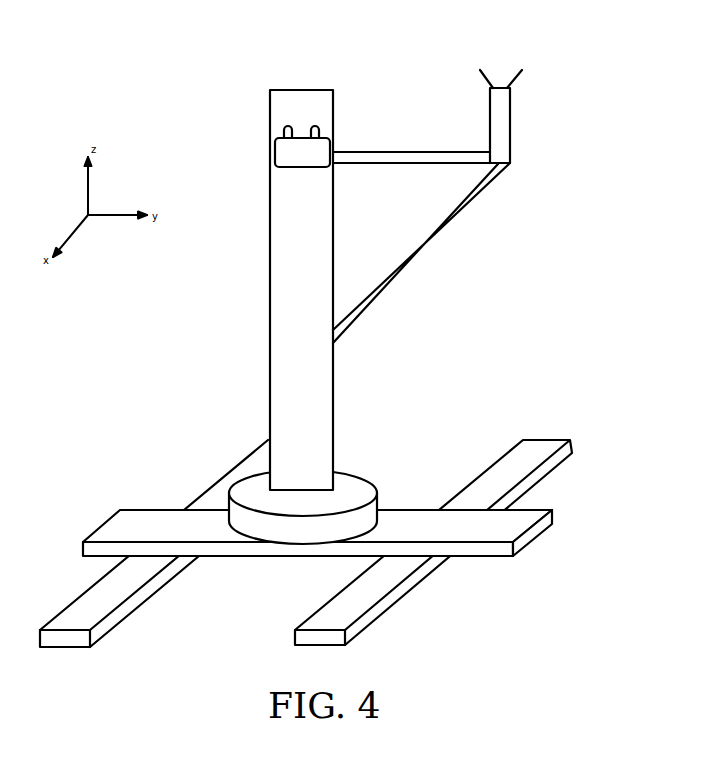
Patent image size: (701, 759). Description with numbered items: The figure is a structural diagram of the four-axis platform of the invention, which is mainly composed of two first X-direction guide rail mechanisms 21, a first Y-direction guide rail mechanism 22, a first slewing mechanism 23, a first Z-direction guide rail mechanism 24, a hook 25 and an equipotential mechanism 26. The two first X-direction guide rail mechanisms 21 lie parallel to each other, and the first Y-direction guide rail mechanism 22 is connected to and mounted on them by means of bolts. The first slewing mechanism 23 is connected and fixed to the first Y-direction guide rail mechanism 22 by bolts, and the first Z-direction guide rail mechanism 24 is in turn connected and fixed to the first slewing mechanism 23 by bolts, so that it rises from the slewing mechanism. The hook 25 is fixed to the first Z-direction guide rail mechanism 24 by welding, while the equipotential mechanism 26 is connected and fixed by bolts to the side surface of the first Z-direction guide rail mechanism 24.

The first X-direction guide rail mechanisms 21 is at (122, 583).
The first Y-direction guide rail mechanism 22 is at (438, 523).
The first slewing mechanism 23 is at (250, 492).
The first Z-direction guide rail mechanism 24 is at (325, 388).
The hook 25 is at (300, 152).
The equipotential mechanism 26 is at (505, 135).